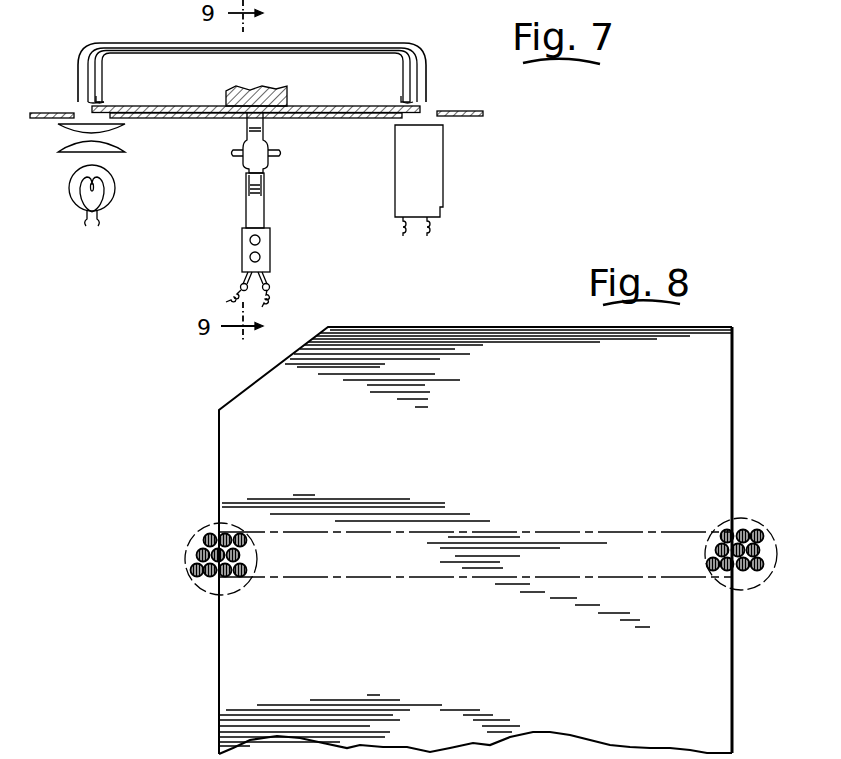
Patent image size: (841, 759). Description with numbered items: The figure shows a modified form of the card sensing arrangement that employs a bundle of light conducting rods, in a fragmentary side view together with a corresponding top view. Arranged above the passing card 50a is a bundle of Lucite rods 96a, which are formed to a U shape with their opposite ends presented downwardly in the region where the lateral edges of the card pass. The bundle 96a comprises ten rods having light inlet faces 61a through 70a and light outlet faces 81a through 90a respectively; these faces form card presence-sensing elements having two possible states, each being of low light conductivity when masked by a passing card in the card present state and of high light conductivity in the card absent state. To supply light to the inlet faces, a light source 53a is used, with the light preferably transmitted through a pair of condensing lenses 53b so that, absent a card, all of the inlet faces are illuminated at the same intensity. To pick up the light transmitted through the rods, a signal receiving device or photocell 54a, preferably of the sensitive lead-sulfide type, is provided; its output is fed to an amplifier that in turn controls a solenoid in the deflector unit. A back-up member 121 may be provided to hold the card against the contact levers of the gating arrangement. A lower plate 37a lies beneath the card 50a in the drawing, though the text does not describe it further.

In FIG. 7, the bundle of Lucite rods 96a is at (353, 43).
In FIG. 8, the bundle of Lucite rods 96a is at (506, 532).
In FIG. 7, the light inlet face 61a is at (76, 107).
In FIG. 7, the light inlet face 70a is at (107, 100).
In FIG. 7, the card 50a is at (188, 106).
In FIG. 8, the card 50a is at (440, 327).
In FIG. 7, the back-up member 121 is at (267, 86).
In FIG. 7, the light outlet face 81a is at (407, 100).
In FIG. 7, the light outlet face 90a is at (438, 101).
In FIG. 7, the condensing lenses 53b is at (120, 144).
In FIG. 7, the light source 53a is at (110, 203).
In FIG. 7, the lower plate 37a is at (293, 118).
In FIG. 7, the photocell 54a is at (443, 177).